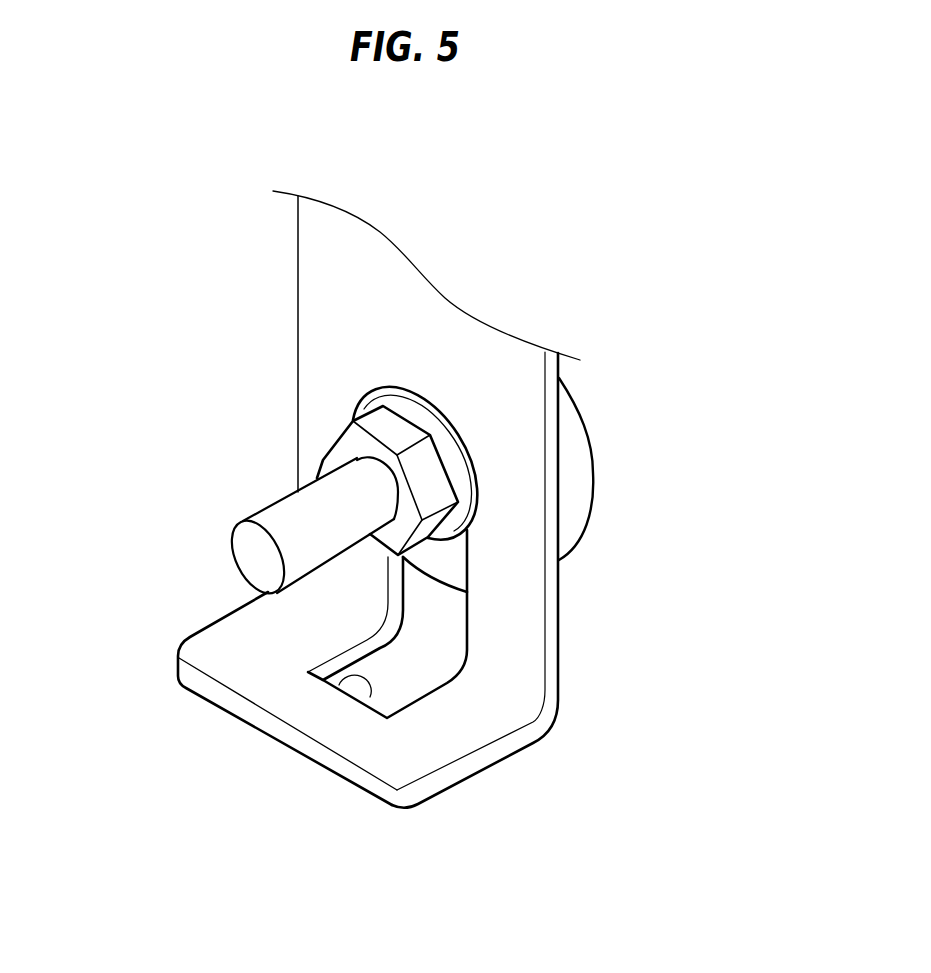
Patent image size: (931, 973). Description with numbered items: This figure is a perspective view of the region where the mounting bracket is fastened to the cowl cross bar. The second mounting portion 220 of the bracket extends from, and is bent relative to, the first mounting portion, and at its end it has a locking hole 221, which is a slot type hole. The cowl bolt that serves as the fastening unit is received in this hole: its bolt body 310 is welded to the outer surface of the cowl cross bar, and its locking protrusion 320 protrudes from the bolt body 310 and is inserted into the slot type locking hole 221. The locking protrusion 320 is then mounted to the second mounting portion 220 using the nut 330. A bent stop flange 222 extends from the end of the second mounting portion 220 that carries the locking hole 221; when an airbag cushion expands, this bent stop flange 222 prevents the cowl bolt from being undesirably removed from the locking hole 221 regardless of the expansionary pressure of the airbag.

The second mounting portion 220 is at (522, 522).
The locking hole 221 is at (336, 684).
The bent stop flange 222 is at (445, 735).
The bolt body 310 is at (578, 472).
The locking protrusion 320 is at (285, 518).
The nut 330 is at (370, 432).